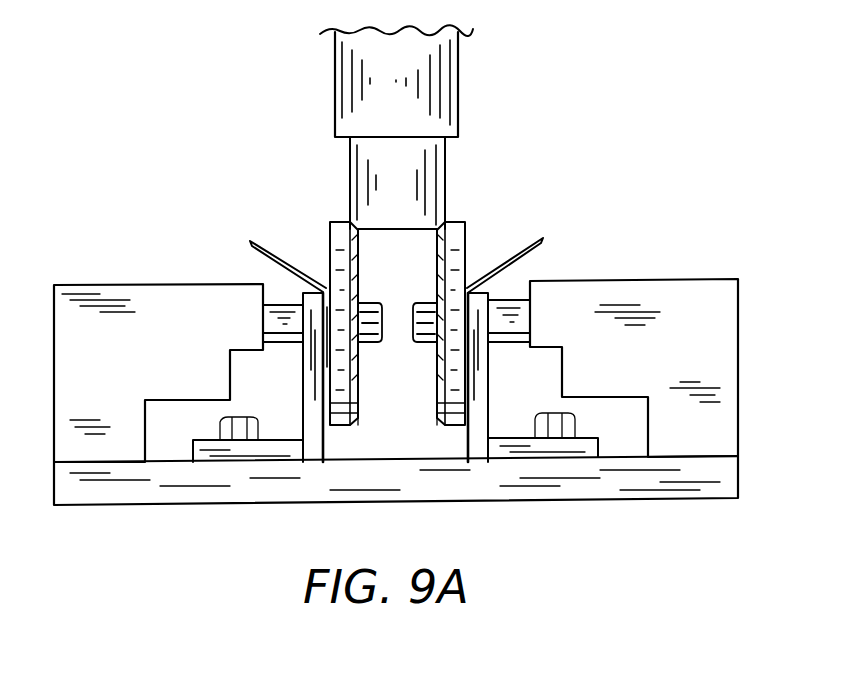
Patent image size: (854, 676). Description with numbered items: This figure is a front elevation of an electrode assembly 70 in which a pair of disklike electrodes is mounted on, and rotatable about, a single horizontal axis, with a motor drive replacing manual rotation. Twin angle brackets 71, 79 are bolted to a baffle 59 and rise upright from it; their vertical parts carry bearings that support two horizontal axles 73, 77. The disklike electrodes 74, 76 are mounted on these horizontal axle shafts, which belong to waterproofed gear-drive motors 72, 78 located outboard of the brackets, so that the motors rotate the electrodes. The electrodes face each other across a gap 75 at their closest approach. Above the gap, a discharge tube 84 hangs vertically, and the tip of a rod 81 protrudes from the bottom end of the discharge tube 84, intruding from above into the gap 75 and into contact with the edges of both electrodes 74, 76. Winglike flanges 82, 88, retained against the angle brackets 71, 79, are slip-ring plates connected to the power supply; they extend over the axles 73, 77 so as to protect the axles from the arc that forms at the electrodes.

The electrode assembly 70 is at (240, 110).
The baffle 59 is at (610, 477).
The gear-drive motor 72 is at (113, 305).
The gear-drive motor 78 is at (653, 303).
The angle bracket 71 is at (323, 447).
The angle bracket 79 is at (480, 445).
The axle 73 is at (287, 328).
The axle 77 is at (515, 332).
The disklike electrode 74 is at (330, 250).
The disklike electrode 76 is at (465, 235).
The gap 75 is at (400, 265).
The rod 81 is at (415, 167).
The discharge tube 84 is at (425, 78).
The winglike flange 82 is at (250, 250).
The winglike flange 88 is at (537, 248).